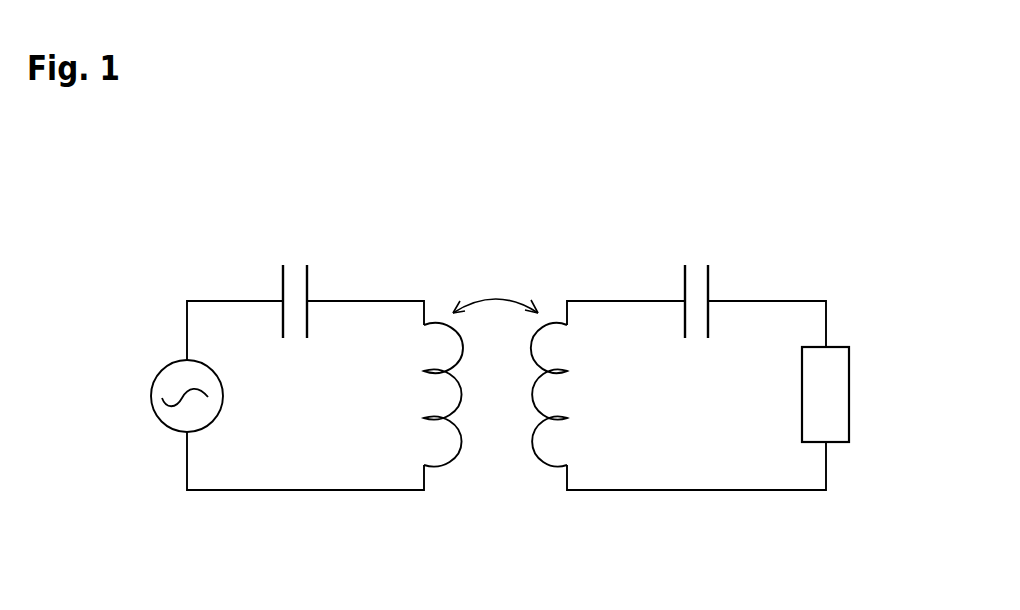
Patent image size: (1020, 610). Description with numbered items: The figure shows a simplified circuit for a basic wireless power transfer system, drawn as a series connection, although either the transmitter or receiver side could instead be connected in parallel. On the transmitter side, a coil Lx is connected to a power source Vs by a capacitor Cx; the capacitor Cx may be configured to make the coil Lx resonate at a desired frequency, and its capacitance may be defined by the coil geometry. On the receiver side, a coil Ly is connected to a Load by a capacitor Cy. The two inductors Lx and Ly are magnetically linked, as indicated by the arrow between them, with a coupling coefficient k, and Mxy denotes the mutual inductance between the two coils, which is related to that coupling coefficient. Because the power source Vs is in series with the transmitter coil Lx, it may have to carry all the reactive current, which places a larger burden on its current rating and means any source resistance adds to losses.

The power source Vs is at (163, 396).
The capacitor Cx is at (294, 286).
The coil Lx is at (442, 362).
The mutual inductance Mxy is at (495, 291).
The coil Ly is at (551, 361).
The capacitor Cy is at (700, 282).
The load Load is at (859, 394).